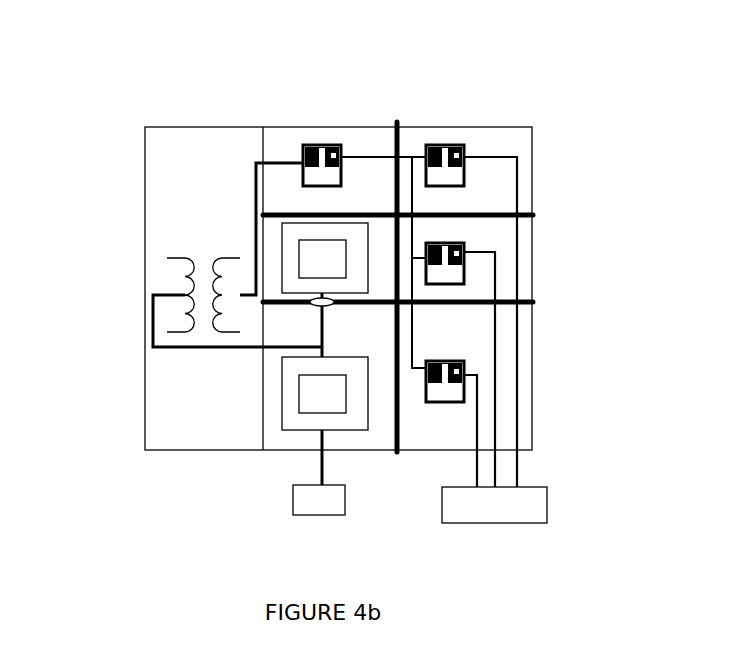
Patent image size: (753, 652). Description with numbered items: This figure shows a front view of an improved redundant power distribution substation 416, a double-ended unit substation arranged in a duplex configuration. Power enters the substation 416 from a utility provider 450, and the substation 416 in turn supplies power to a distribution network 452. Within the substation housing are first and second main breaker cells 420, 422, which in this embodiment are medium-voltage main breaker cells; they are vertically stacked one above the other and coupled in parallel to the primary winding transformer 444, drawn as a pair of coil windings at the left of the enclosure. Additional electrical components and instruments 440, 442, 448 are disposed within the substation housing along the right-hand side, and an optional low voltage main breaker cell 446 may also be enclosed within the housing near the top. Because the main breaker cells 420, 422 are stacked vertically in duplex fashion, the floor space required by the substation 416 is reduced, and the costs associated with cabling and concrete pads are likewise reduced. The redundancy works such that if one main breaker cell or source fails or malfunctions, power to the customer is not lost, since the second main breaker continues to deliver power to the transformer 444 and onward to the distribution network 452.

The redundant power distribution substation 416 is at (152, 534).
The first medium-voltage main breaker cell 420 is at (285, 245).
The second medium-voltage main breaker cell 422 is at (293, 419).
The electrical component and instrument 440 is at (464, 273).
The electrical component and instrument 442 is at (464, 392).
The primary winding transformer 444 is at (175, 273).
The low voltage main breaker cell 446 is at (323, 170).
The electrical component and instrument 448 is at (442, 170).
The utility provider 450 is at (345, 500).
The distribution network 452 is at (547, 500).